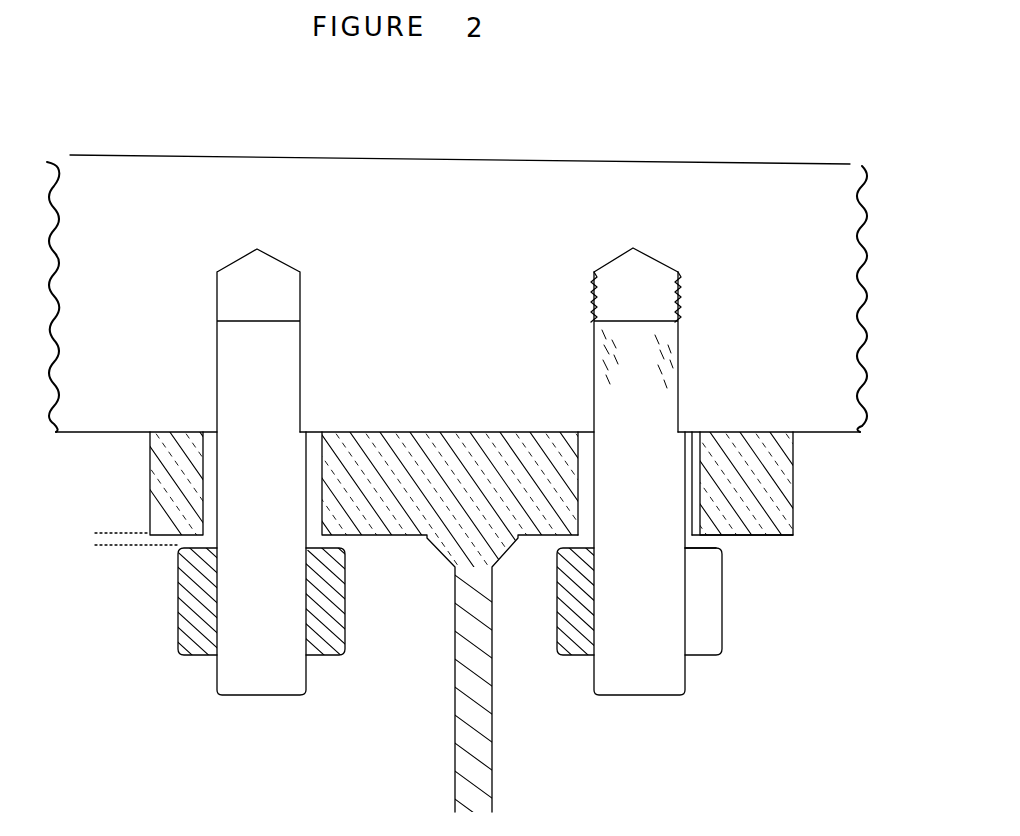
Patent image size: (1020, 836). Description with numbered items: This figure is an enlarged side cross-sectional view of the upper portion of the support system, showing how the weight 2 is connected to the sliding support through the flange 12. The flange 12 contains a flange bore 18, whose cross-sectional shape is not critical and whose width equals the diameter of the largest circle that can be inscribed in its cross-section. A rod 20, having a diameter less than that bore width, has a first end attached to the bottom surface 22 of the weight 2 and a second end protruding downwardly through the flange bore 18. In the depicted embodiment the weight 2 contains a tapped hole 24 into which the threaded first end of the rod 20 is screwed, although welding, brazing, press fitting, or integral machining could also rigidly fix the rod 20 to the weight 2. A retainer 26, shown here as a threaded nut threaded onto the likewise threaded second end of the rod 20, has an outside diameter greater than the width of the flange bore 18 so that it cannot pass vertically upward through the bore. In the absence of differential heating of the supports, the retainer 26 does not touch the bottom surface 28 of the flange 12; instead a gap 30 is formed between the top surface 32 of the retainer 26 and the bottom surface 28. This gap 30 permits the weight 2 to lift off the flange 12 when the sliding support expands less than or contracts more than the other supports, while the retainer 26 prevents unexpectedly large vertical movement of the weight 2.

The weight 2 is at (805, 217).
The flange 12 is at (793, 487).
The flange bore 18 is at (692, 432).
The rod 20 is at (670, 697).
The bottom surface 22 is at (838, 432).
The tapped hole 24 is at (678, 286).
The retainer 26 is at (722, 643).
The bottom surface 28 is at (772, 537).
The gap 30 is at (112, 545).
The top surface 32 is at (700, 550).